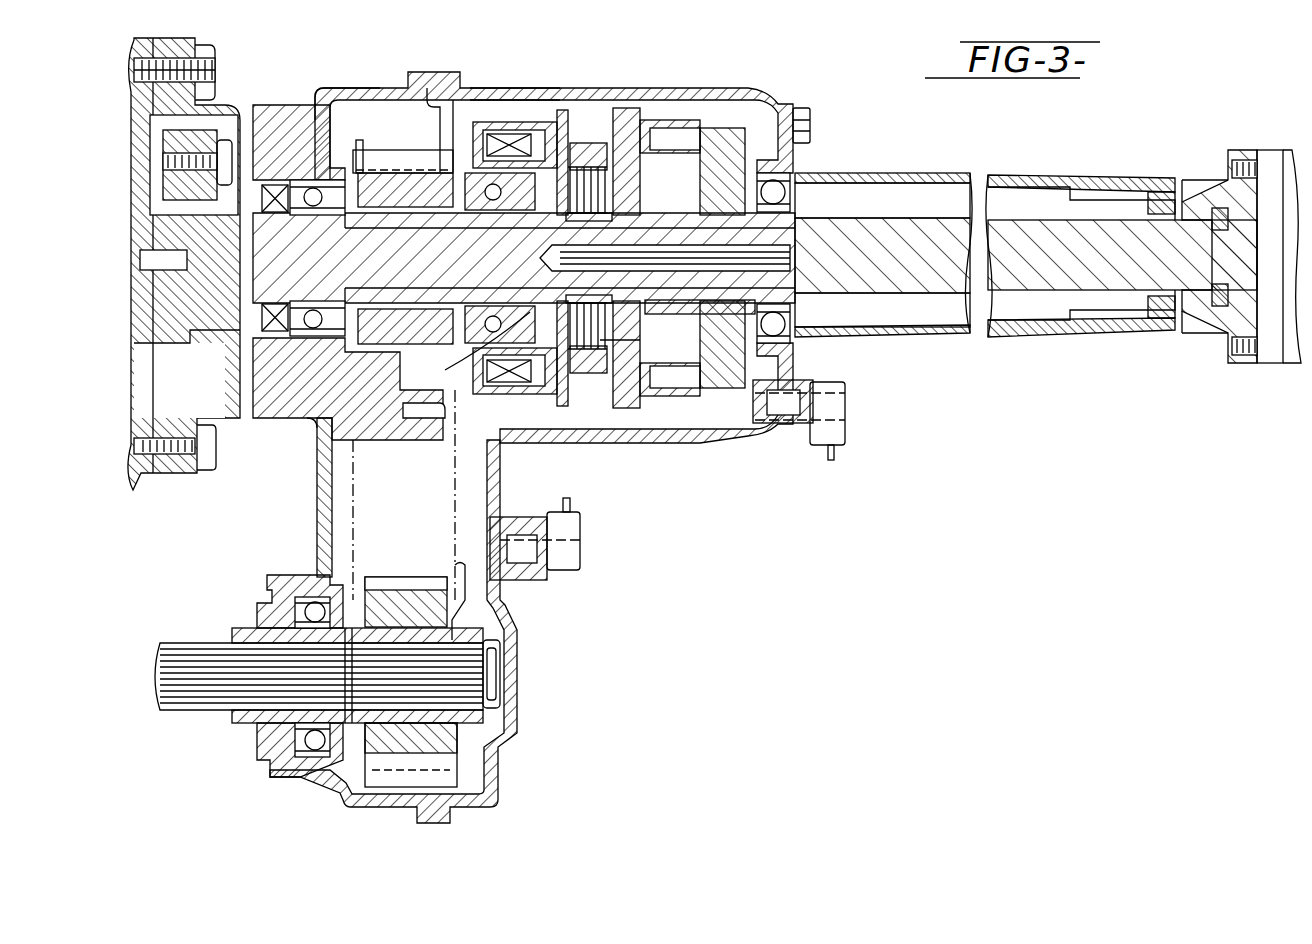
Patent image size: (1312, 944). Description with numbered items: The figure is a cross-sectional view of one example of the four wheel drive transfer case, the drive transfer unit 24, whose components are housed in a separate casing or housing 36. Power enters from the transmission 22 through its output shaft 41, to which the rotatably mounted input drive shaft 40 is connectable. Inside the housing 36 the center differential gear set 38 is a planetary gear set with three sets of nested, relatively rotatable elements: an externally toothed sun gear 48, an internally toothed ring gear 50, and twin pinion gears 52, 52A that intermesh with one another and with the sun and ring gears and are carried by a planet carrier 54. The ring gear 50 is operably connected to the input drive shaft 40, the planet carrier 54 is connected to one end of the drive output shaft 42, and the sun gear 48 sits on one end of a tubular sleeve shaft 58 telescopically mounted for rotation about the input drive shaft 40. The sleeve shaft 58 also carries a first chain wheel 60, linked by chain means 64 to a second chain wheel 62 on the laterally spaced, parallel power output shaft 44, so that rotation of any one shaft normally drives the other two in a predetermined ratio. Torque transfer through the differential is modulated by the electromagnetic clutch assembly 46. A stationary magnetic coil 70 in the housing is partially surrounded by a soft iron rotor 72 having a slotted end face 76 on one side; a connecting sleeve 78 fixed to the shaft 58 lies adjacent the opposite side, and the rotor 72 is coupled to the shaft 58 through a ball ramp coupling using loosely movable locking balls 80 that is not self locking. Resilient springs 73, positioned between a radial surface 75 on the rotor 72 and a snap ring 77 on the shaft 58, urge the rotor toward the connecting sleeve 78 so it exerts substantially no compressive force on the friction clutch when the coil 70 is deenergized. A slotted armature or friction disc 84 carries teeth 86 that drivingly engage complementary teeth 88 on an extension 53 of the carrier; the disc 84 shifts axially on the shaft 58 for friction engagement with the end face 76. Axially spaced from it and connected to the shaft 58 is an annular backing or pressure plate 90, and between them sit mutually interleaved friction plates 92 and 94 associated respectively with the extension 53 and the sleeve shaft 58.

The transmission 22 is at (200, 44).
The drive transfer unit 24 is at (823, 123).
The housing 36 is at (435, 88).
The center differential gear set 38 is at (725, 97).
The input drive shaft 40 is at (258, 210).
The output shaft 41 is at (170, 335).
The power output shaft 42 is at (1015, 233).
The power output shaft 44 is at (205, 643).
The electromagnetic clutch assembly 46 is at (499, 100).
The sun gear 48 is at (668, 303).
The ring gear 50 is at (658, 125).
The pinion gear 52 is at (662, 352).
The pinion gear 52A is at (682, 125).
The extension 53 is at (620, 135).
The planet carrier 54 is at (742, 130).
The tubular sleeve shaft 58 is at (379, 222).
The first chain wheel 60 is at (360, 185).
The second chain wheel 62 is at (430, 745).
The chain means 64 is at (360, 150).
The magnetic coil means 70 is at (470, 175).
The soft iron rotor 72 is at (511, 390).
The resilient springs 73 is at (474, 350).
The radial surface 75 is at (534, 190).
The slotted end face 76 is at (565, 340).
The snap ring 77 is at (532, 312).
The connecting sleeve 78 is at (462, 187).
The locking balls 80 is at (490, 325).
The friction disc 84 is at (560, 160).
The teeth 86 is at (576, 150).
The teeth 88 is at (586, 165).
The backing plate 90 is at (605, 345).
The friction plates 92 is at (600, 345).
The friction plates 94 is at (569, 350).